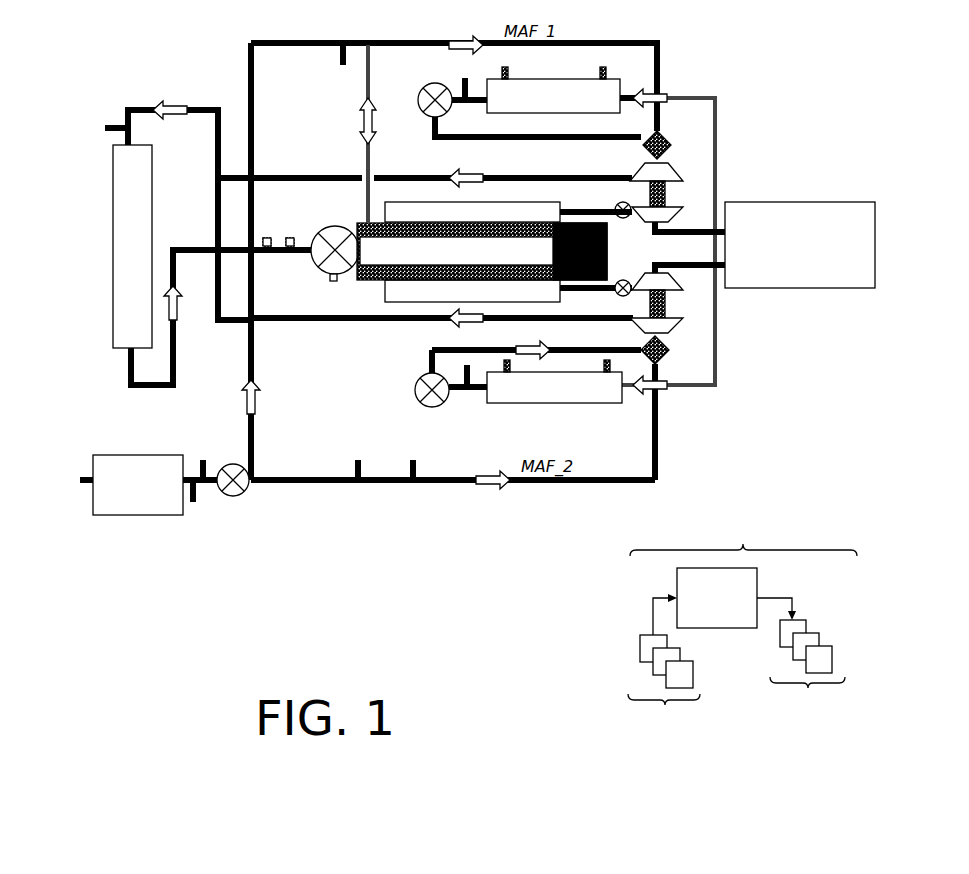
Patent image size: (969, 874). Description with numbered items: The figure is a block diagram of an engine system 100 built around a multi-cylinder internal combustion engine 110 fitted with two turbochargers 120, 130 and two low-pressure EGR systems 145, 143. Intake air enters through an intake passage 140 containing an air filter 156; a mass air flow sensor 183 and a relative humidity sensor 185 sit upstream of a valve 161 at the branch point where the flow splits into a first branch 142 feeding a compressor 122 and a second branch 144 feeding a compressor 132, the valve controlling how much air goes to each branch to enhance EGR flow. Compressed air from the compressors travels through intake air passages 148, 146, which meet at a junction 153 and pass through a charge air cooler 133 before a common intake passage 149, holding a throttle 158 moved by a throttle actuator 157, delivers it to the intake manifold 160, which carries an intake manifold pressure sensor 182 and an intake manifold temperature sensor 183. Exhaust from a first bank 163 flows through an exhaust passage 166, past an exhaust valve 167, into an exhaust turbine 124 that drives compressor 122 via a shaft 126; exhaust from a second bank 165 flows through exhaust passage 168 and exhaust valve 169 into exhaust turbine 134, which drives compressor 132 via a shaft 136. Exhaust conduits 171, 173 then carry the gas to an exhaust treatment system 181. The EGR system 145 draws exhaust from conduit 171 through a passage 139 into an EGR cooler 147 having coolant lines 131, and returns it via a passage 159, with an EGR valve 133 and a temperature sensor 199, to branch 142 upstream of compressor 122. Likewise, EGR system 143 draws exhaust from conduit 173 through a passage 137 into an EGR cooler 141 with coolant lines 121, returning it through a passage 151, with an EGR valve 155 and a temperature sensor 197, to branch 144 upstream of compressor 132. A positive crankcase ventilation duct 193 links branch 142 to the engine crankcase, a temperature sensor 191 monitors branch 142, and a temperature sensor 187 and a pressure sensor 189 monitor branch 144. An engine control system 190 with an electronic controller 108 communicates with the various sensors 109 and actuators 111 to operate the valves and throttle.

The engine system 100 is at (193, 60).
The electronic controller 108 is at (717, 598).
The sensors 109 is at (664, 670).
The internal combustion engine 110 is at (473, 258).
The actuators 111 is at (805, 664).
The turbocharger 120 is at (703, 192).
The coolant lines 121 is at (505, 362).
The compressor 122 is at (680, 178).
The exhaust turbine 124 is at (622, 216).
The shaft 126 is at (666, 195).
The turbocharger 130 is at (695, 308).
The coolant lines 131 is at (508, 70).
The compressor 132 is at (640, 322).
The charge air cooler 133 is at (113, 193).
The exhaust turbine 134 is at (620, 281).
The shaft 136 is at (684, 302).
The passage 137 is at (718, 350).
The passage 139 is at (717, 130).
The intake passage 140 is at (80, 480).
The EGR cooler 141 is at (535, 387).
The first branch of the intake passage 142 is at (251, 343).
The first low-pressure EGR system 143 is at (608, 418).
The second branch of the intake passage 144 is at (336, 478).
The second low-pressure EGR system 145 is at (631, 86).
The intake air passage 146 is at (320, 325).
The EGR cooler 147 is at (554, 96).
The intake air passage 148 is at (435, 178).
The common intake passage 149 is at (280, 254).
The passage 151 is at (445, 348).
The junction 153 is at (218, 178).
The EGR valve 155 is at (420, 378).
The air filter 156 is at (155, 485).
The throttle actuator 157 is at (333, 283).
The throttle 158 is at (330, 226).
The passage 159 is at (510, 140).
The intake manifold 160 is at (376, 283).
The valve 161 is at (246, 490).
The first bank 163 is at (472, 212).
The second bank 165 is at (472, 291).
The exhaust passage 166 is at (578, 210).
The exhaust valve 167 is at (618, 205).
The exhaust passage 168 is at (600, 293).
The exhaust valve 169 is at (614, 296).
The exhaust conduit 171 is at (680, 232).
The exhaust conduit 173 is at (690, 262).
The exhaust treatment system 181 is at (800, 245).
The intake manifold pressure sensor 182 is at (268, 237).
The intake manifold temperature sensor 183 is at (291, 237).
The relative humidity sensor 185 is at (203, 460).
The temperature sensor 187 is at (362, 462).
The pressure sensor 189 is at (418, 462).
The engine control system 190 is at (742, 624).
The temperature sensor 191 is at (340, 60).
The positive crankcase ventilation duct 193 is at (364, 95).
The temperature sensor 197 is at (471, 388).
The temperature sensor 199 is at (462, 78).